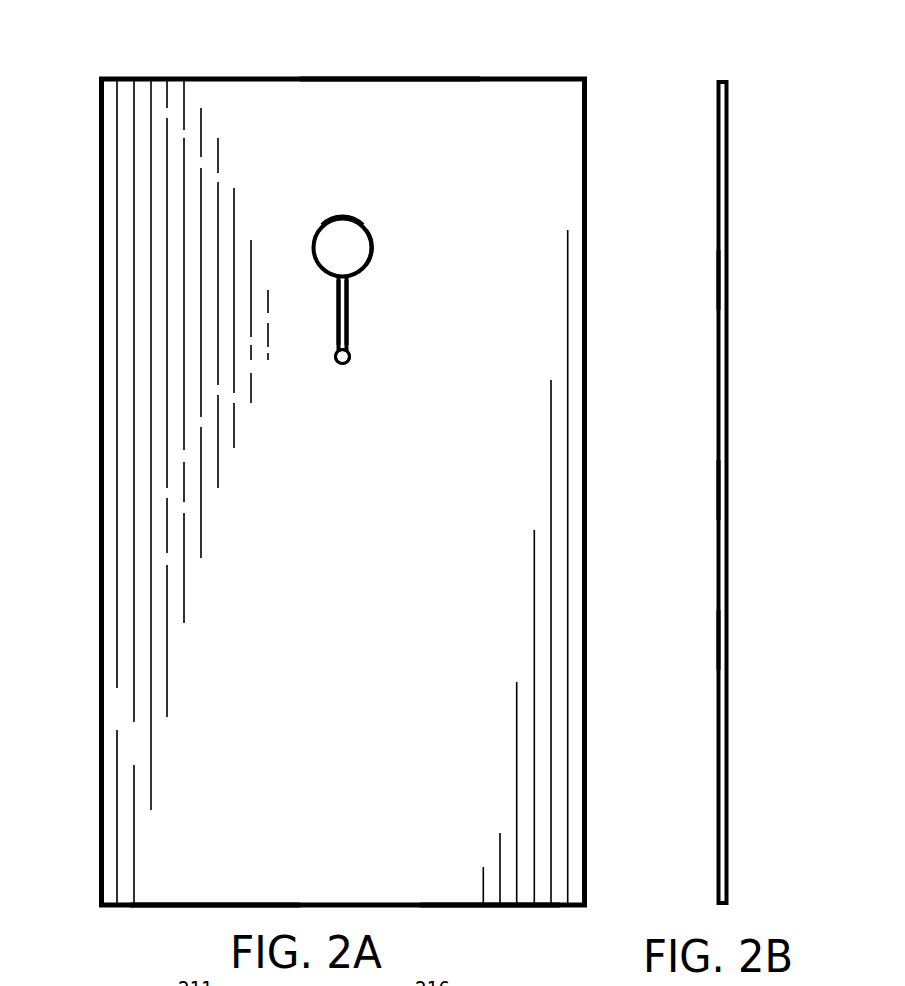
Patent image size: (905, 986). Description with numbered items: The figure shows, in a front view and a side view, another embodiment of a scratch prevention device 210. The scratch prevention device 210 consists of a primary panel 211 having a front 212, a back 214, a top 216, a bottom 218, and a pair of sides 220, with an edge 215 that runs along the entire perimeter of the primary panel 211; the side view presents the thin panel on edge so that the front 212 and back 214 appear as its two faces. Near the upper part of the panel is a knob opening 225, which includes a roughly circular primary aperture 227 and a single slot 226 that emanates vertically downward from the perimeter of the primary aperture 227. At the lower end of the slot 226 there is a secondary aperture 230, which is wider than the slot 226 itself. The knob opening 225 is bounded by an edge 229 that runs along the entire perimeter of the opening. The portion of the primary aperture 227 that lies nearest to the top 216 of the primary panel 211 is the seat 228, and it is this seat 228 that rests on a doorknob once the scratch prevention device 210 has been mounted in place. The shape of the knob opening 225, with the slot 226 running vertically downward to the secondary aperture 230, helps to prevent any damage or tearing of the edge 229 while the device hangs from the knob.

In FIG. 2A, the scratch prevention device 210 is at (242, 52).
In FIG. 2B, the primary panel 211 is at (715, 278).
In FIG. 2B, the front 212 is at (715, 487).
In FIG. 2B, the back 214 is at (728, 572).
In FIG. 2A, the edge 215 is at (472, 907).
In FIG. 2A, the top 216 is at (408, 78).
In FIG. 2A, the bottom 218 is at (195, 908).
In FIG. 2A, the sides 220 is at (100, 462).
In FIG. 2B, the sides 220 is at (715, 640).
In FIG. 2A, the knob opening 225 is at (398, 211).
In FIG. 2A, the slot 226 is at (337, 305).
In FIG. 2A, the primary aperture 227 is at (338, 232).
In FIG. 2A, the seat 228 is at (351, 218).
In FIG. 2A, the edge 229 is at (372, 249).
In FIG. 2A, the secondary aperture 230 is at (350, 356).